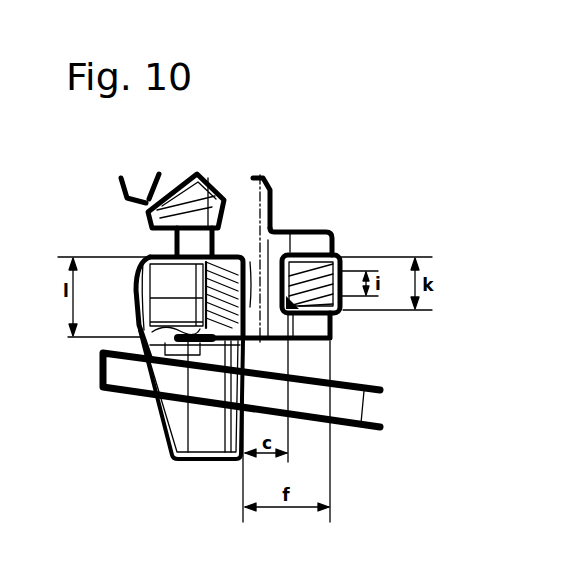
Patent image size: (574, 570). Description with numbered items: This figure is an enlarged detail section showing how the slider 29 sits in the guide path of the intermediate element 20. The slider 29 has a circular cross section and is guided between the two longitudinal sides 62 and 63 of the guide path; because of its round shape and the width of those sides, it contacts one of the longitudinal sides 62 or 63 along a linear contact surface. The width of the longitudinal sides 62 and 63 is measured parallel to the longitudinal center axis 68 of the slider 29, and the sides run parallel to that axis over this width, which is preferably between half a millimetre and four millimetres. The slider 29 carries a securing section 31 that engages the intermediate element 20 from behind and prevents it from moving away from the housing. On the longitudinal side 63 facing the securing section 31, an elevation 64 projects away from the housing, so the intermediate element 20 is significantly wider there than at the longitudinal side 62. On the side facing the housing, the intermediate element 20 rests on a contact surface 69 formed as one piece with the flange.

The intermediate element 20 is at (152, 250).
The slider 29 is at (230, 340).
The securing section 31 is at (317, 328).
The longitudinal side 62 is at (267, 285).
The longitudinal side 63 is at (250, 307).
The elevation 64 is at (162, 321).
The longitudinal center axis 68 is at (255, 318).
The contact surface 69 is at (313, 238).